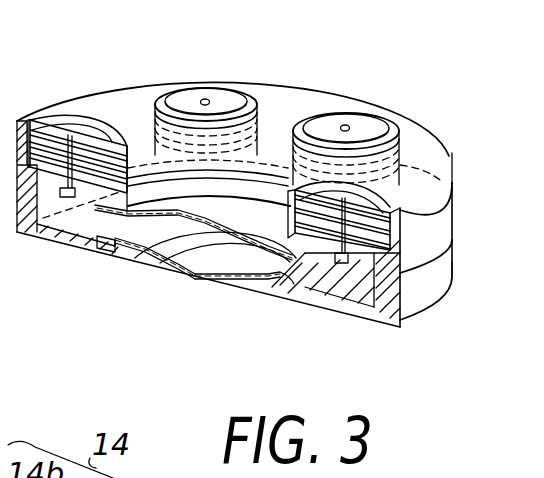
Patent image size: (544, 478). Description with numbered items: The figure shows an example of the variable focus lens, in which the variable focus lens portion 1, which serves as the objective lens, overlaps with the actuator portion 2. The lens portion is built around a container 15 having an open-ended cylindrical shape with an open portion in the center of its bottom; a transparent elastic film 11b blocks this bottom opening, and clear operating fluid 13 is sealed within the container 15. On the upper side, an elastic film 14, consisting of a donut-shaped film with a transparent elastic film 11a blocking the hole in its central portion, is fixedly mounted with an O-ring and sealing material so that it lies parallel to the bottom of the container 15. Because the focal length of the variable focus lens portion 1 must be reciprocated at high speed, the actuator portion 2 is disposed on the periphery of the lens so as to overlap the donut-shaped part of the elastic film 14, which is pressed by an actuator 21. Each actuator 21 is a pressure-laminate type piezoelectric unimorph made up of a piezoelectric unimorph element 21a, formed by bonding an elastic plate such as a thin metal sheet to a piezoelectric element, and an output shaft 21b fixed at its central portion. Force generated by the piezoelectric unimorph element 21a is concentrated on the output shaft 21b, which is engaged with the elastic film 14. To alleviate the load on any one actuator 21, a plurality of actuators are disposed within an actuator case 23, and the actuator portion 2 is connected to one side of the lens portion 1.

The variable focus lens portion 1 is at (408, 343).
The actuator portion 2 is at (348, 76).
The transparent elastic film 11a is at (162, 224).
The transparent elastic film 11b is at (197, 283).
The clear operating fluid 13 is at (60, 225).
The elastic film 14 is at (350, 270).
The container 15 is at (452, 265).
The actuator 21 is at (223, 97).
The piezoelectric unimorph element 21a is at (72, 133).
The output shaft 21b is at (67, 131).
The actuator case 23 is at (452, 187).